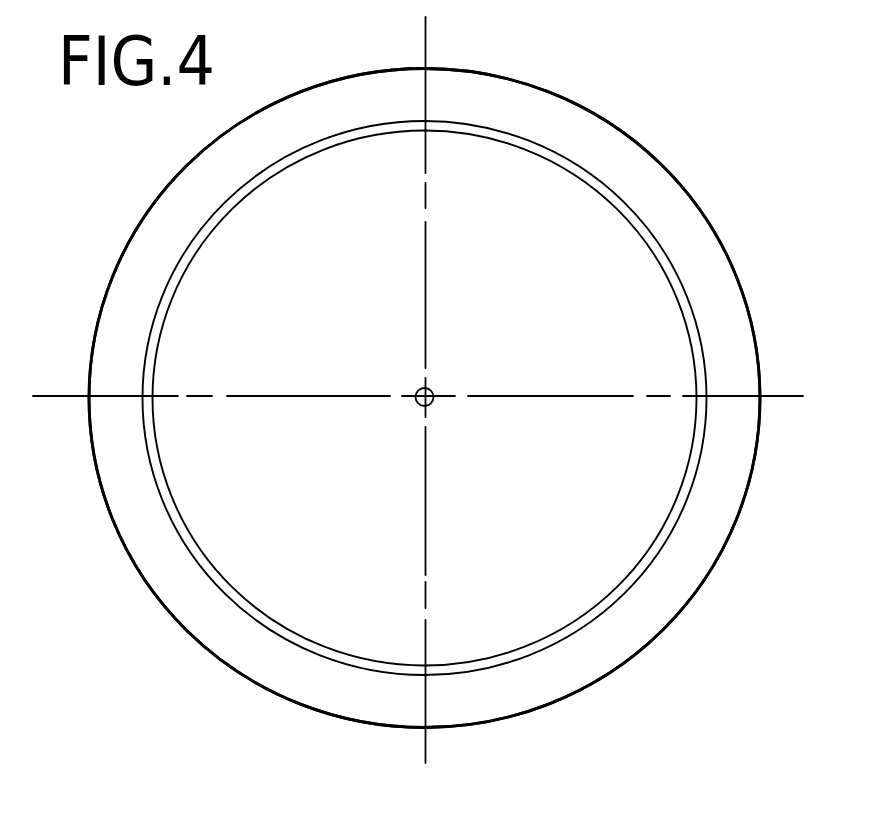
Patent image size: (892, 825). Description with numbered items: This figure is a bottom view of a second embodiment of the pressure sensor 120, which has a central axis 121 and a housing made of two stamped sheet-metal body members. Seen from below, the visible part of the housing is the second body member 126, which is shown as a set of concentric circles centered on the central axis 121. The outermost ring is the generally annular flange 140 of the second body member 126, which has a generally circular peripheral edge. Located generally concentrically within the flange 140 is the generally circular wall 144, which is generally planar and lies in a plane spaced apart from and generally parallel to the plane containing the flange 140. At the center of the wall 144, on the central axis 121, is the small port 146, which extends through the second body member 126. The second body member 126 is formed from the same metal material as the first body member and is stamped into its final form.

The pressure sensor 120 is at (697, 115).
The central axis 121 is at (432, 400).
The second body member 126 is at (676, 213).
The annular flange 140 is at (702, 248).
The wall 144 is at (665, 325).
The port 146 is at (429, 391).